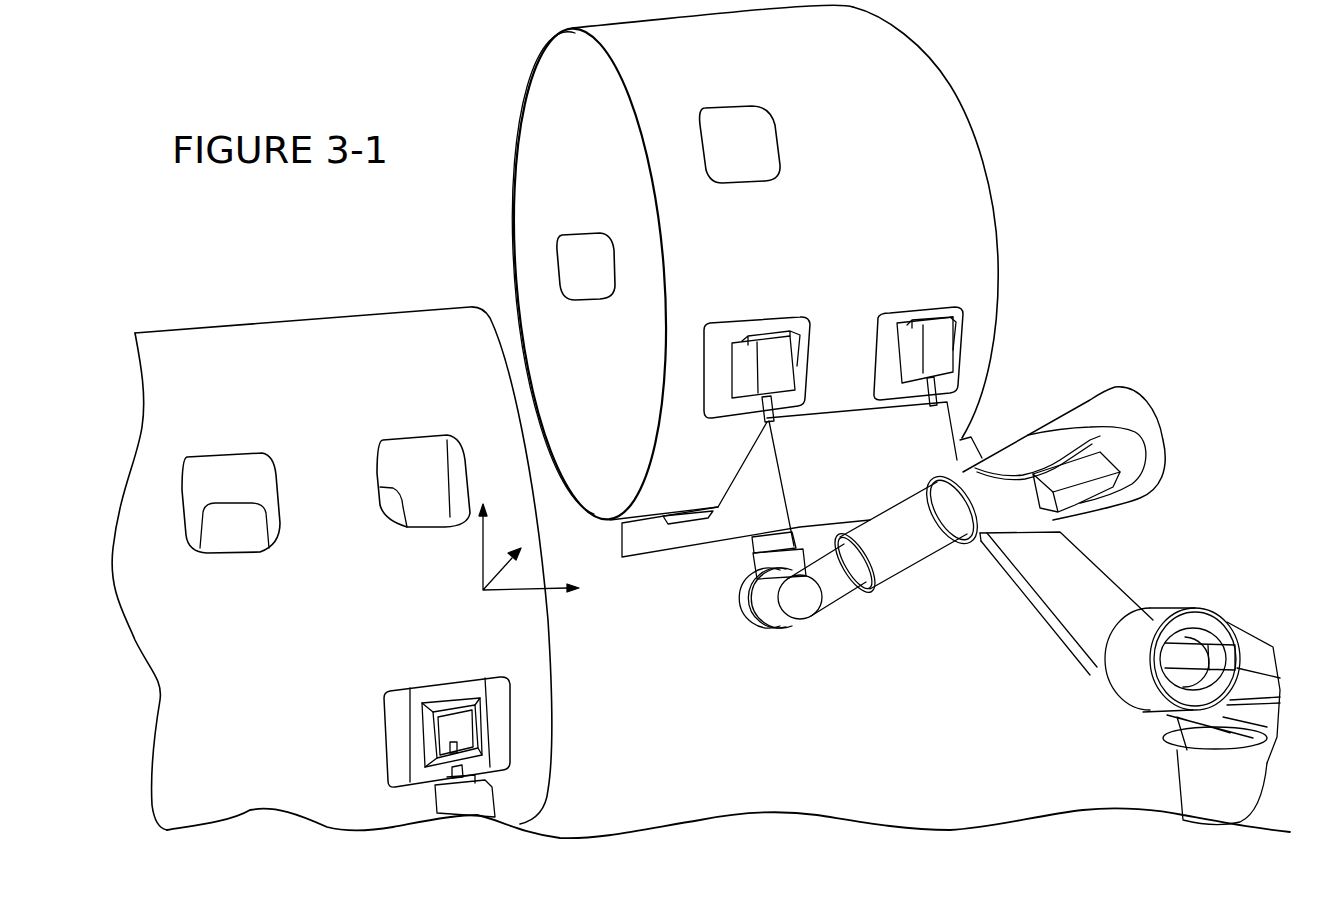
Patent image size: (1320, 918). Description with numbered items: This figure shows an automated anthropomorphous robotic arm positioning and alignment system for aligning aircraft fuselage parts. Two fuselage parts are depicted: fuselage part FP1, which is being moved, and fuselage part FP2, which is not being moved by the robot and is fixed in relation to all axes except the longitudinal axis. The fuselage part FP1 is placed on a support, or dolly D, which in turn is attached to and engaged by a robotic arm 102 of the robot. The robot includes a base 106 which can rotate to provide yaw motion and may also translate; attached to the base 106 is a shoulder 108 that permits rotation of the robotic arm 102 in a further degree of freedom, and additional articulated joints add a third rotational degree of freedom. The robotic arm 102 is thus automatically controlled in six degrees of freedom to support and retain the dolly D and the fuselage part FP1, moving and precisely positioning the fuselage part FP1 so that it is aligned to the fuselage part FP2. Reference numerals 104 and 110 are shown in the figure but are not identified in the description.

The fuselage part FP1 is at (955, 172).
The fuselage part FP2 is at (316, 322).
The support (dolly) D is at (861, 472).
The robotic arm 102 is at (840, 606).
The hook arm assembly 104 is at (1238, 572).
The base 106 is at (1175, 782).
The shoulder 108 is at (1235, 645).
The bracket 110 is at (758, 548).